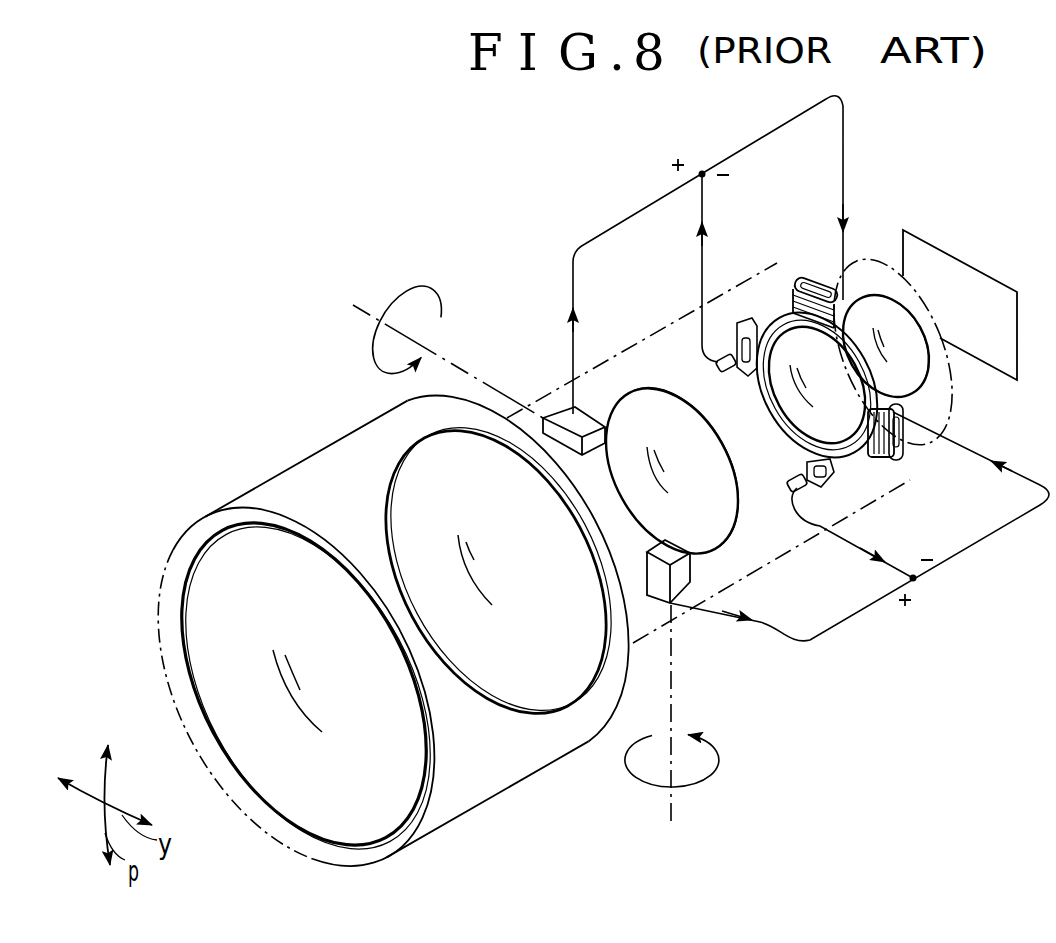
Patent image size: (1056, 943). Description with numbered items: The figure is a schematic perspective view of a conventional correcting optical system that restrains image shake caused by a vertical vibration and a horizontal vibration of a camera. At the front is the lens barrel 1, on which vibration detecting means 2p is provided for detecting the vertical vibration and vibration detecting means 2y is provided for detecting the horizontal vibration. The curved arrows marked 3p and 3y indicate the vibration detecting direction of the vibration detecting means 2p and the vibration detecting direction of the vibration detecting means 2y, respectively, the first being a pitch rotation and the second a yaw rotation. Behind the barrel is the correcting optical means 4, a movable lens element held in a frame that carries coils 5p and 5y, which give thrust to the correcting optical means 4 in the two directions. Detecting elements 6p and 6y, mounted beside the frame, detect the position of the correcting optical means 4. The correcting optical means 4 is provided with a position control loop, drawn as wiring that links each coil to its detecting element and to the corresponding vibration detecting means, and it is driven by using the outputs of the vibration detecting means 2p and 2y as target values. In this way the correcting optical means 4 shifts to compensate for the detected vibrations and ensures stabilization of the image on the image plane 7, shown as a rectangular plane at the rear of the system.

The lens barrel 1 is at (565, 764).
The vibration detecting means 2p is at (567, 417).
The vibration detecting means 2y is at (680, 578).
The vibration detecting direction 3p is at (365, 308).
The vibration detecting direction 3y is at (673, 807).
The correcting optical means 4 is at (777, 300).
The coil 5p is at (793, 277).
The coil 5y is at (900, 460).
The detecting element 6p is at (717, 362).
The detecting element 6y is at (792, 490).
The image plane 7 is at (953, 243).